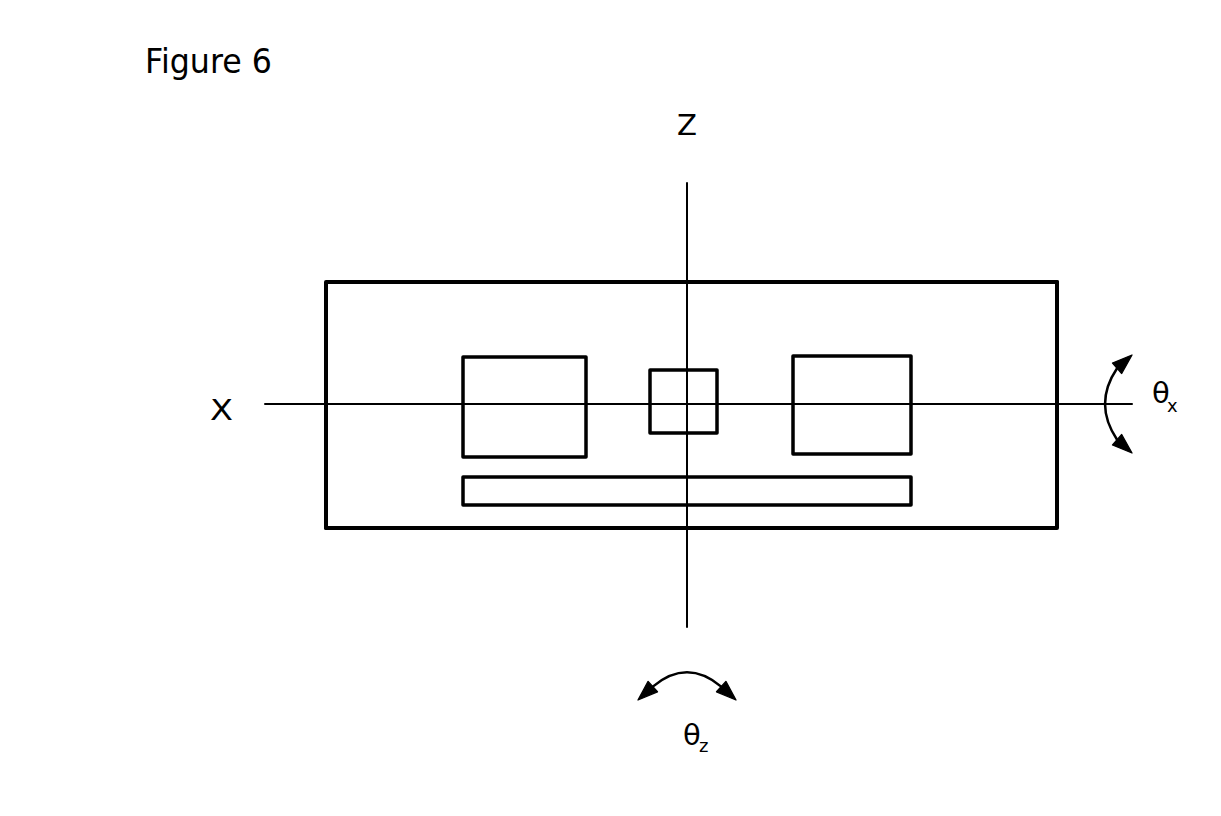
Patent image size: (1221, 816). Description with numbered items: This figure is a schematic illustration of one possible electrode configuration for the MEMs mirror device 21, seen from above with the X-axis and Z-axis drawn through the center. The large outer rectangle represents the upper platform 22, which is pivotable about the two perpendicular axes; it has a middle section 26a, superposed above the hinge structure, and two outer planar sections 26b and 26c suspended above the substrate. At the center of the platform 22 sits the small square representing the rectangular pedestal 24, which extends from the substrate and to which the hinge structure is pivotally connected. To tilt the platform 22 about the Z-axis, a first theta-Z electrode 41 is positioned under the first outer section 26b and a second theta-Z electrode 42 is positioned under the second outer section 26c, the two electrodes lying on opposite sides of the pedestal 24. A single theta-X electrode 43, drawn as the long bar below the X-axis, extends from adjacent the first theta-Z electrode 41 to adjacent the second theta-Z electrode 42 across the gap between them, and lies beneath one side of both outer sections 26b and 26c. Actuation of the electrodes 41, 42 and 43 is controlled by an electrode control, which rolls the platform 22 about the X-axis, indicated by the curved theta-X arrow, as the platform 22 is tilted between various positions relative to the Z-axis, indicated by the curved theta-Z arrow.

The MEMs mirror device 21 is at (888, 112).
The upper platform 22 is at (471, 268).
The rectangular pedestal 24 is at (697, 387).
The middle section 26a is at (649, 301).
The first outer planar section 26b is at (380, 478).
The second outer planar section 26c is at (982, 293).
The first θZ electrode 41 is at (487, 380).
The second θZ electrode 42 is at (822, 365).
The θX electrode 43 is at (513, 505).